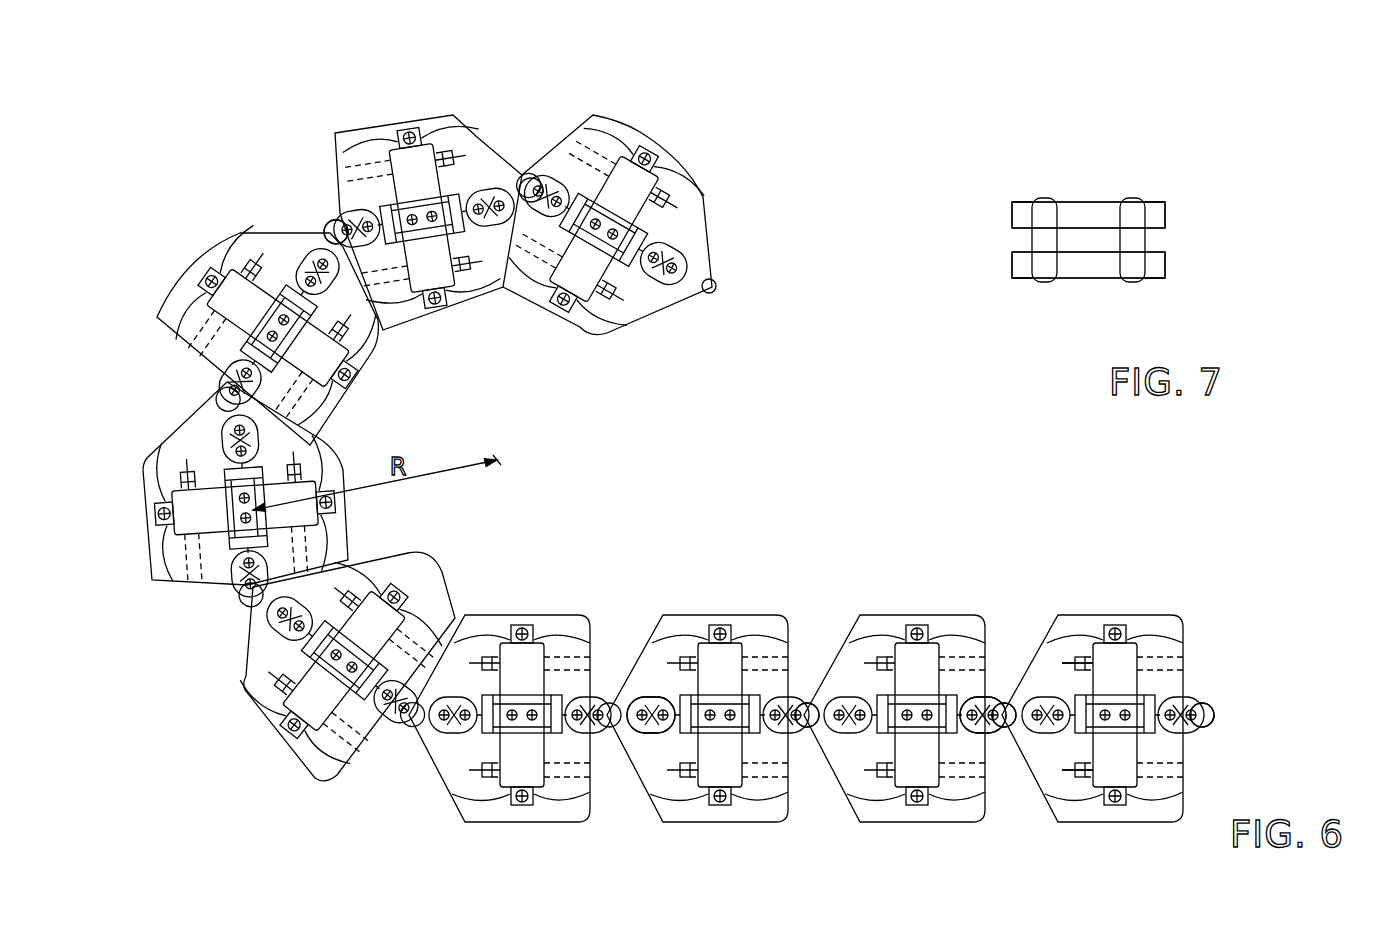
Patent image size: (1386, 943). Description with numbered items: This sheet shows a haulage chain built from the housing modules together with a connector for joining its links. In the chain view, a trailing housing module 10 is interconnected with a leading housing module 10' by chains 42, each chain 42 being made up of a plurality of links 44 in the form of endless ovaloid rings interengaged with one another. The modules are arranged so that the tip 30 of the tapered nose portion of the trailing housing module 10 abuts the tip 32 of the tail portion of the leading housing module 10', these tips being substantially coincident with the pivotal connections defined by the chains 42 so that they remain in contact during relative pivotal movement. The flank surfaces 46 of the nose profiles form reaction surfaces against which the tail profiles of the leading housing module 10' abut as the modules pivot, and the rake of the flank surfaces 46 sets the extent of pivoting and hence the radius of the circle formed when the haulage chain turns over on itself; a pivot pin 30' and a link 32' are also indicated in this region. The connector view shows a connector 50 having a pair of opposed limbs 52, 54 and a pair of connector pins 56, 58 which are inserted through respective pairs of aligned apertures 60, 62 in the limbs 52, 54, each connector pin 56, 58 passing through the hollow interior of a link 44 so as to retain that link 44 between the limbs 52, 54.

In FIG. 6, the housing module 10 is at (762, 468).
In FIG. 6, the leading housing module 10' is at (822, 578).
In FIG. 6, the tip of nose portion 30 is at (773, 454).
In FIG. 6, the pivot pin 30' is at (774, 477).
In FIG. 6, the tip of tail portion 32 is at (746, 448).
In FIG. 6, the link 32' is at (797, 403).
In FIG. 6, the chain 42 is at (1208, 737).
In FIG. 6, the link 44 is at (648, 732).
In FIG. 6, the flank surface 46 is at (1030, 648).
In FIG. 7, the connector 50 is at (1183, 180).
In FIG. 7, the limb 52 is at (1088, 220).
In FIG. 7, the limb 54 is at (1090, 262).
In FIG. 7, the connector pin 56 is at (1042, 218).
In FIG. 7, the connector pin 58 is at (1133, 222).
In FIG. 7, the aperture 60 is at (1030, 200).
In FIG. 7, the aperture 62 is at (1032, 282).